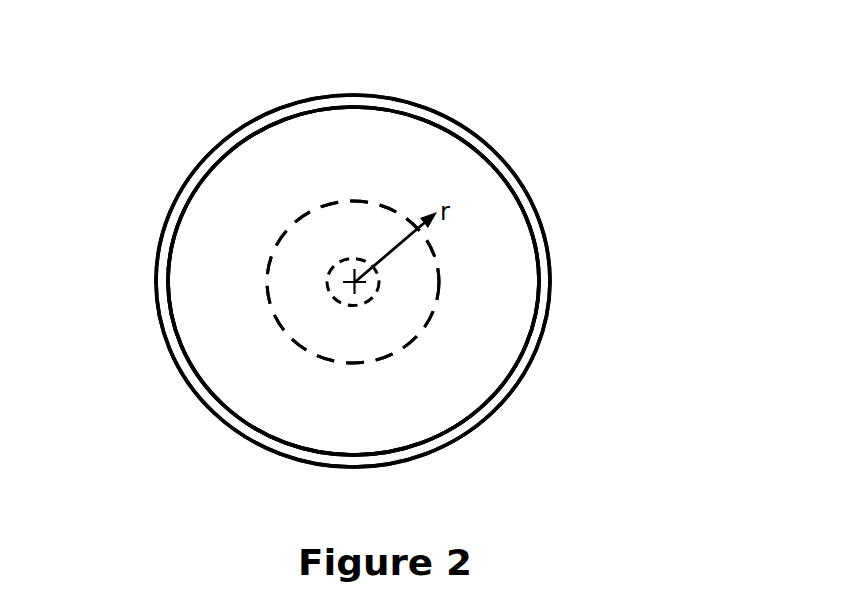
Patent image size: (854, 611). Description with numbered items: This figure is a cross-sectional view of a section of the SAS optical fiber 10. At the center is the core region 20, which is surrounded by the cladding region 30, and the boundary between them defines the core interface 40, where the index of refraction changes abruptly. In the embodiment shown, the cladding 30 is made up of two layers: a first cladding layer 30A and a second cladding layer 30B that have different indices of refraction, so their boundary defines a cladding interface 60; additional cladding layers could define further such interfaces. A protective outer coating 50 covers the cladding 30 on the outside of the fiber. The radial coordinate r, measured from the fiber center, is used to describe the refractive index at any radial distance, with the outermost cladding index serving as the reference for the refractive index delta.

The SAS optical fiber 10 is at (615, 125).
The core region 20 is at (337, 270).
The cladding region 30 is at (216, 227).
The first cladding layer 30A is at (403, 268).
The second cladding layer 30B is at (475, 292).
The core interface 40 is at (353, 259).
The protective outer coating 50 is at (453, 118).
The cladding interface 60 is at (412, 340).